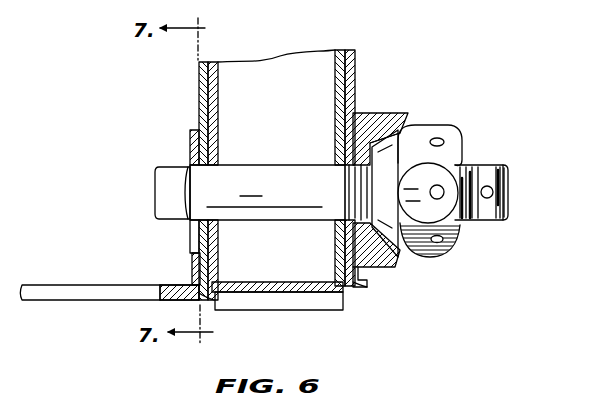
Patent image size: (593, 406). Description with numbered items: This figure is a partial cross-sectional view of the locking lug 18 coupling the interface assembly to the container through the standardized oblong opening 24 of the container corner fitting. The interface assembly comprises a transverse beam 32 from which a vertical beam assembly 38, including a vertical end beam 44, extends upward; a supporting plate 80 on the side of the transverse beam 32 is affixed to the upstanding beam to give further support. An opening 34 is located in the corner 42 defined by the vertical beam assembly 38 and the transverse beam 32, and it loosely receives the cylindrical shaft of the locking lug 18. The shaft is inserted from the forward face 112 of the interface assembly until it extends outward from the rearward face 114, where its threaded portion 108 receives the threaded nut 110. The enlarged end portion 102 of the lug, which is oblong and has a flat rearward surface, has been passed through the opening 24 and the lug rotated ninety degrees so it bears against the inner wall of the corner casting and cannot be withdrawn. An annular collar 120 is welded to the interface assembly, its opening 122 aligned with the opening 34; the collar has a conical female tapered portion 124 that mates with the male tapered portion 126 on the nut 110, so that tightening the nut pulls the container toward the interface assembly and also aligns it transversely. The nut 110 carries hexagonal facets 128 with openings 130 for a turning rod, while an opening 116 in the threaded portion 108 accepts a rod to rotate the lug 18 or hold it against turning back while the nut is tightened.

The locking lug 18 is at (261, 135).
The oblong opening 24 is at (183, 249).
The transverse beam 32 is at (290, 310).
The opening 34 is at (225, 222).
The vertical beam assembly 38 is at (287, 172).
The corner 42 is at (347, 298).
The vertical end beam 44 is at (256, 58).
The supporting plate 80 is at (206, 300).
The enlarged end portion 102 is at (163, 163).
The threaded portion 108 is at (483, 165).
The threaded nut 110 is at (470, 179).
The forward face 112 is at (199, 104).
The rearward face 114 is at (357, 82).
The opening 116 is at (505, 202).
The annular collar 120 is at (384, 116).
The opening 122 is at (190, 140).
The tapered portion 124 is at (402, 132).
The tapered portion 126 is at (400, 252).
The facets 128 is at (463, 143).
The openings 130 is at (438, 135).